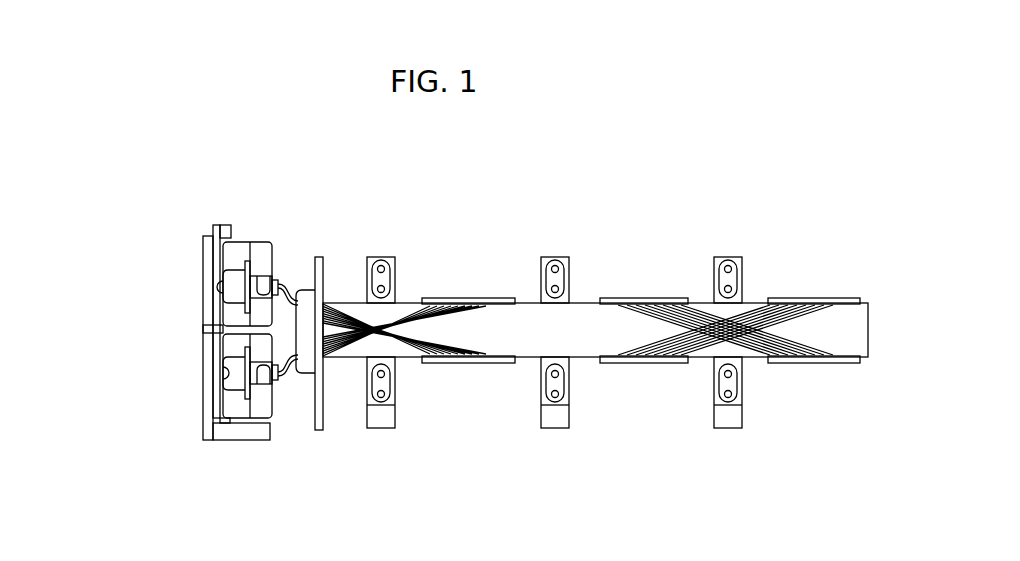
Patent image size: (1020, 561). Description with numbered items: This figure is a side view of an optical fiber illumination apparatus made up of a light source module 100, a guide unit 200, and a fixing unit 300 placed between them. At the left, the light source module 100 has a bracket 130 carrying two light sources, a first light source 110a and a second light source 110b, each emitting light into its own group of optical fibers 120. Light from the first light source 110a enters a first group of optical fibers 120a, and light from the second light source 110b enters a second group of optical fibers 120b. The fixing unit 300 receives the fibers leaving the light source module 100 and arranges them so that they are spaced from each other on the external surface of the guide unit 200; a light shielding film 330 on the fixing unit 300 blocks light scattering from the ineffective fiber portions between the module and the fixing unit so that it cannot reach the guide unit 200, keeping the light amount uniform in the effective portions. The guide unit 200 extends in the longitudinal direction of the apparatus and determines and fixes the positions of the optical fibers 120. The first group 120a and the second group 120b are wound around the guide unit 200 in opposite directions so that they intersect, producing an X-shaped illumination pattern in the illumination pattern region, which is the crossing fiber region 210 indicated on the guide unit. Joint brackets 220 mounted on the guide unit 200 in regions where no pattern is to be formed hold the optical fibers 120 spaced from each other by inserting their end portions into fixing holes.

The light source module 100 is at (197, 238).
The bracket 130 is at (262, 245).
The first light source 110a is at (218, 372).
The second light source 110b is at (218, 288).
The optical fibers 120 is at (550, 329).
The first group of optical fibers 120a is at (293, 368).
The second group of optical fibers 120b is at (293, 290).
The fixing unit 300 is at (344, 328).
The light shielding film 330 is at (318, 420).
The guide unit 200 is at (587, 298).
The conductor bundle 210 is at (384, 350).
The joint bracket 220 is at (455, 298).